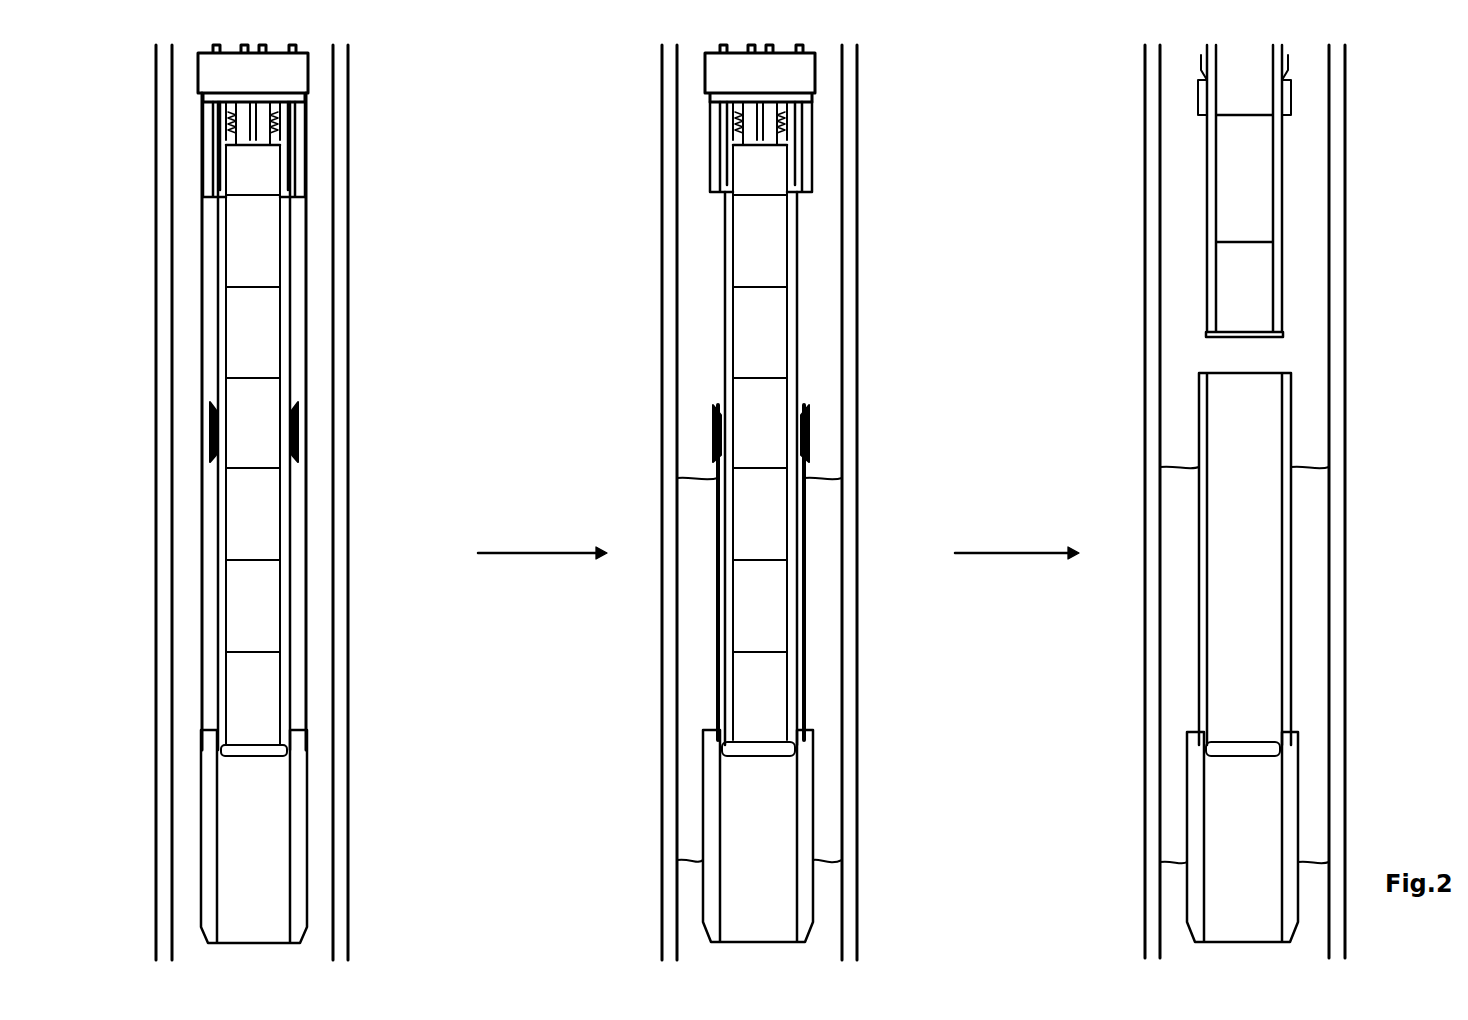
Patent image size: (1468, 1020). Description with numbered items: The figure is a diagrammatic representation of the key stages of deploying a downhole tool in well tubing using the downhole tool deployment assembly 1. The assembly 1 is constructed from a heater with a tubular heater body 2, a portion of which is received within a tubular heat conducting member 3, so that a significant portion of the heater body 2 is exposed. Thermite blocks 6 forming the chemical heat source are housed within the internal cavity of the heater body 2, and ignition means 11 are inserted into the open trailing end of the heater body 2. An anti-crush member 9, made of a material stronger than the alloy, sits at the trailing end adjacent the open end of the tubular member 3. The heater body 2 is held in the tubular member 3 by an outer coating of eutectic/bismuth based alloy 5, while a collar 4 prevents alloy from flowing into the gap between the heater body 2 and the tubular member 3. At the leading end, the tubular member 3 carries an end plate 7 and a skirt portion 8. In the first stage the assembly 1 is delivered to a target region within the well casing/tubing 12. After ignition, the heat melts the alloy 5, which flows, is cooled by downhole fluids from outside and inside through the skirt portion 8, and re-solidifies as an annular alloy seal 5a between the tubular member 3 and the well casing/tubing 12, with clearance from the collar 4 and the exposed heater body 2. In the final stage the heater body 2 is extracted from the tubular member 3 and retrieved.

The assembly 1 is at (188, 206).
The tubular heater body 2 is at (797, 296).
The tubular heat conducting member 3 is at (217, 548).
The collar 4 is at (296, 435).
The eutectic/bismuth based alloy 5 is at (296, 318).
The annular alloy seal 5a is at (826, 526).
The thermite blocks 6 is at (262, 270).
The end plate 7 is at (262, 756).
The skirt portion 8 is at (212, 864).
The anti-crush member 9 is at (296, 160).
The ignition means 11 is at (285, 95).
The well casing/tubing 12 is at (165, 385).